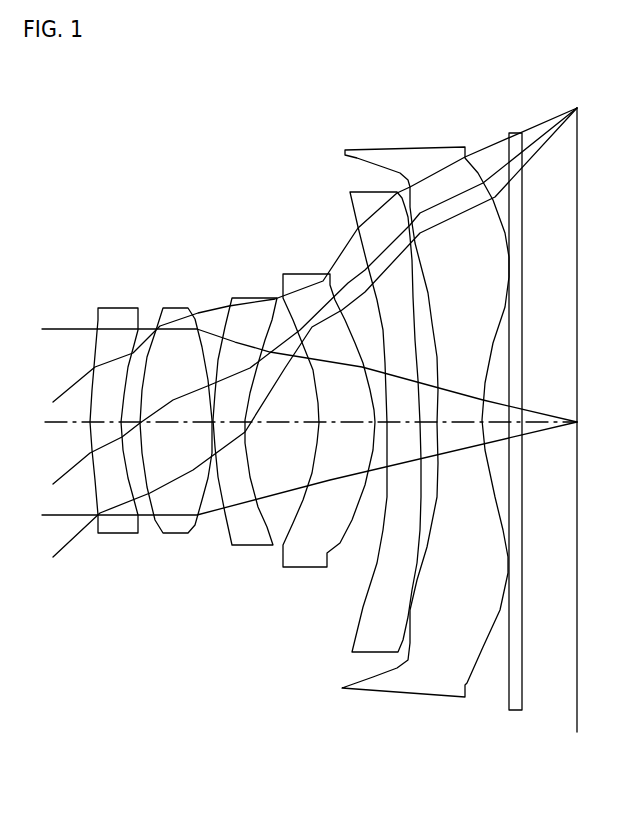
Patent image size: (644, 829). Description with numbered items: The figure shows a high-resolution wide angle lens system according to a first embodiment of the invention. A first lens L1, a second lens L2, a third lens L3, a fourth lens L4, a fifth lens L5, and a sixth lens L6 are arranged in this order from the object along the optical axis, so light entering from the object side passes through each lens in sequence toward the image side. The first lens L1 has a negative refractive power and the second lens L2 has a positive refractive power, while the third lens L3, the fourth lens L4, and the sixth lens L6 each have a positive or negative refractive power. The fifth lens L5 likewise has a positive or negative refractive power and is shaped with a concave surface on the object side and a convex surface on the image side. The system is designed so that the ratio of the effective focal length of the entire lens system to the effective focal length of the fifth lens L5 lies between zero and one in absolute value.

The first lens L1 is at (120, 533).
The second lens L2 is at (175, 533).
The third lens L3 is at (252, 547).
The fourth lens L4 is at (303, 563).
The fifth lens L5 is at (373, 635).
The sixth lens L6 is at (430, 688).